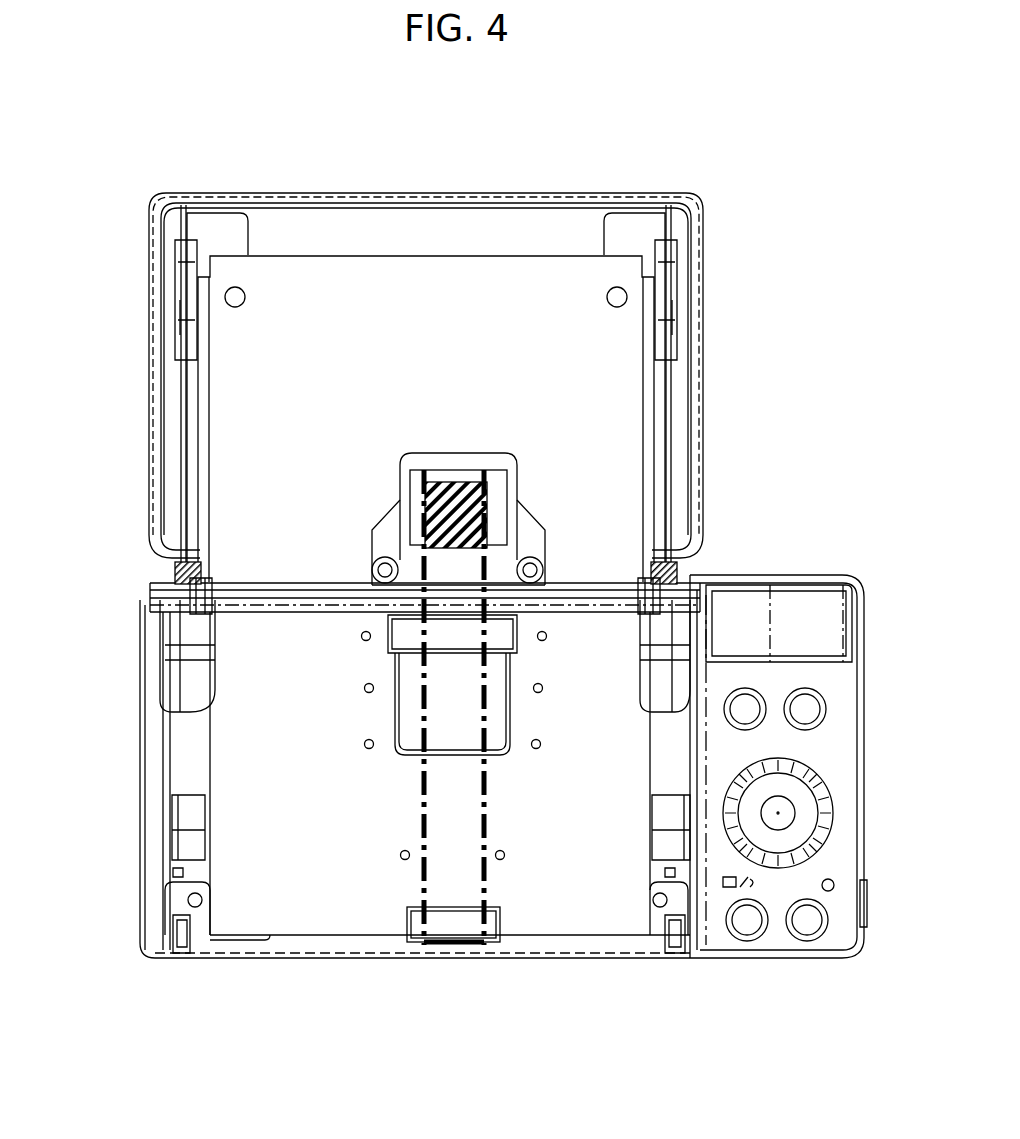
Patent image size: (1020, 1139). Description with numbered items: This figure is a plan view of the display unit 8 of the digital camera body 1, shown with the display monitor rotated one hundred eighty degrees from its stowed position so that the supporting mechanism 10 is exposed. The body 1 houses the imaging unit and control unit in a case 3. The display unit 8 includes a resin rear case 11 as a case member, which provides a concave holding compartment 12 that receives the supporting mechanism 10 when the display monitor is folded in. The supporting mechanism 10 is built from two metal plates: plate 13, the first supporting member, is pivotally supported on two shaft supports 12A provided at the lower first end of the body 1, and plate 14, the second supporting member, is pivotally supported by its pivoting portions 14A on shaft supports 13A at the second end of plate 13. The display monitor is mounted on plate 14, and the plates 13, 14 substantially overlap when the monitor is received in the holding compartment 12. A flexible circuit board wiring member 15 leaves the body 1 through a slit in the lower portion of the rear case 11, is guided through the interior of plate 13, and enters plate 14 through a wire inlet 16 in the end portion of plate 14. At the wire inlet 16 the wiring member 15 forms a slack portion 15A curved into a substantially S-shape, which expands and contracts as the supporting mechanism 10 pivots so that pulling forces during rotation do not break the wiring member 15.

The body 1 is at (815, 558).
The case 3 is at (527, 960).
The display unit 8 is at (665, 168).
The supporting mechanism 10 is at (210, 494).
The rear case 11 is at (333, 963).
The holding compartment 12 is at (582, 938).
The shaft support 12A is at (176, 915).
The plate 13 is at (315, 890).
The shaft support 13A is at (175, 637).
The plate 14 is at (477, 290).
The pivoting portion 14A is at (190, 598).
The wiring member 15 is at (425, 905).
The slack portion 15A is at (456, 528).
The wire inlet 16 is at (530, 465).